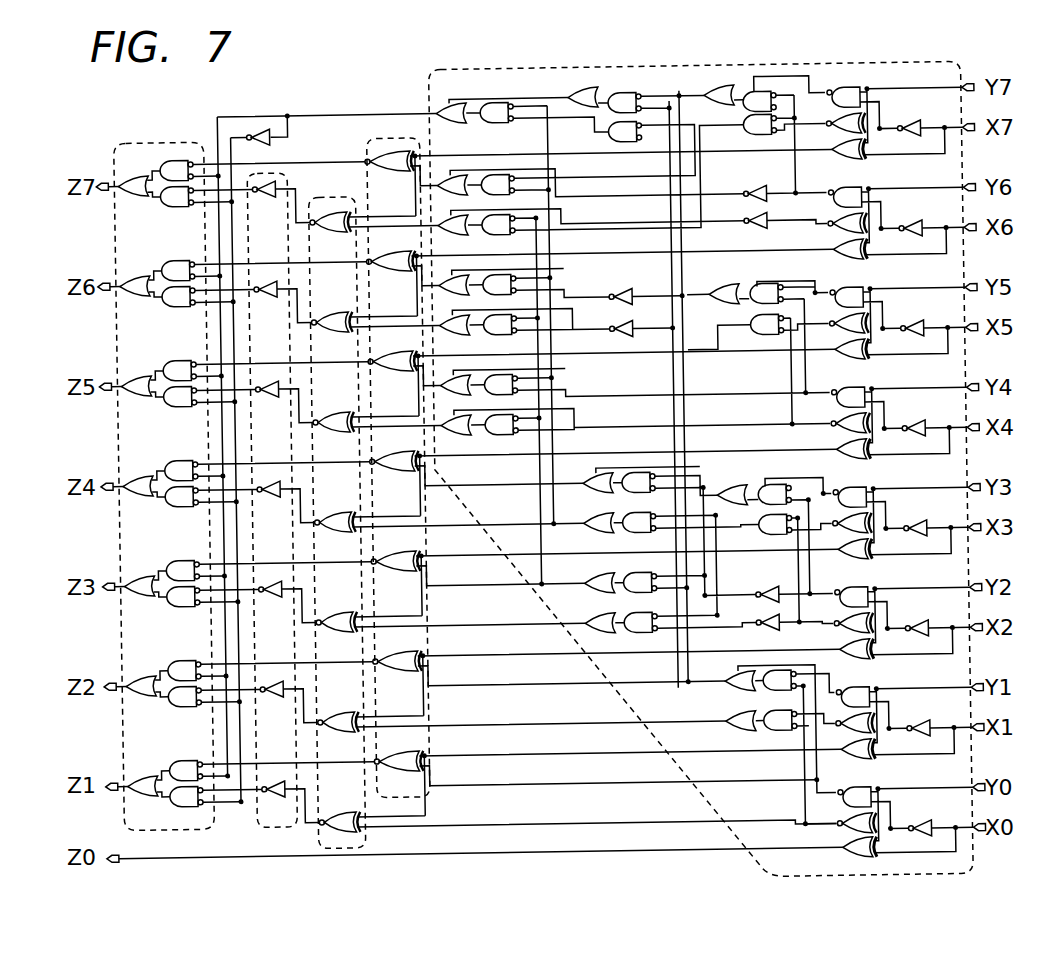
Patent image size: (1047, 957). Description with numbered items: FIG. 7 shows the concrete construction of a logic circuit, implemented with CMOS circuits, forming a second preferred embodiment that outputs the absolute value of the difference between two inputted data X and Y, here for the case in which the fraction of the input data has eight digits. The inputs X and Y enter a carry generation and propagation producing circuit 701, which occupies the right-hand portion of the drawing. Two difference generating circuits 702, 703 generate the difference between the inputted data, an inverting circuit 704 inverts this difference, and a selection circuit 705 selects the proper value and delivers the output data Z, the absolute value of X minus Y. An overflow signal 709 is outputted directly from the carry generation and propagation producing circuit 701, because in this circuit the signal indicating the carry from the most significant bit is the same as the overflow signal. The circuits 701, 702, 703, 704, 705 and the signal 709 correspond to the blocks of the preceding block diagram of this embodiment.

The carry generation and propagation producing circuit 701 is at (882, 67).
The difference generating circuit 702 is at (390, 138).
The difference generating circuit 703 is at (342, 848).
The inverting circuit 704 is at (281, 827).
The selection circuit 705 is at (165, 143).
The overflow signal 709 is at (318, 118).